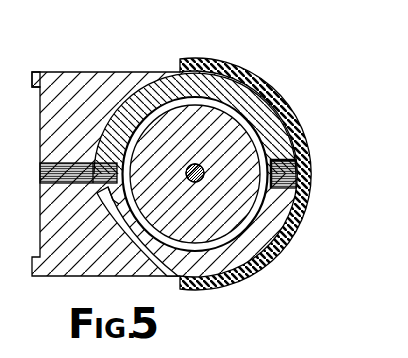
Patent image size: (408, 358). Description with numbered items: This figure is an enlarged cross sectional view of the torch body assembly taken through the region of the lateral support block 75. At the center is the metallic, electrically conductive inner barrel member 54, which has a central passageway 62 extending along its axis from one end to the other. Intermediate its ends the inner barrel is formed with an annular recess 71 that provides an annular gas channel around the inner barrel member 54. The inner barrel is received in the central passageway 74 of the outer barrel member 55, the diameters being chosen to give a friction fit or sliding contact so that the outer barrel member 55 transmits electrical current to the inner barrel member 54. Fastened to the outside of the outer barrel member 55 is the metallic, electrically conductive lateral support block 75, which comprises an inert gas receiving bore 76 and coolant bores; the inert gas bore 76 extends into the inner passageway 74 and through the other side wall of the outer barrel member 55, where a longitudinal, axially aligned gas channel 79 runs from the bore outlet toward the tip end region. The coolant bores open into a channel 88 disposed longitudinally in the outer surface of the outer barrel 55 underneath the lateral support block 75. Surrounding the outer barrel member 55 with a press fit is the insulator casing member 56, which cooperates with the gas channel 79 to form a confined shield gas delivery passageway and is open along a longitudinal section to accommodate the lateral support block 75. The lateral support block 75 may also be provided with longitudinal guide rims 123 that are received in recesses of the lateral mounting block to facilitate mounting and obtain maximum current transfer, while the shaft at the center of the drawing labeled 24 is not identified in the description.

The longitudinal guide rims 123 is at (35, 72).
The lateral support block 75 is at (73, 80).
The annular recess 71 is at (174, 104).
The inner barrel member 54 is at (205, 110).
The shaft 24 is at (203, 172).
The insulator casing member 56 is at (205, 173).
The central passageway 62 is at (270, 157).
The central passageway 74 is at (272, 157).
The gas channel 79 is at (308, 174).
The inert gas receiving bore 76 is at (40, 172).
The channel 88 is at (110, 207).
The outer barrel member 55 is at (188, 262).